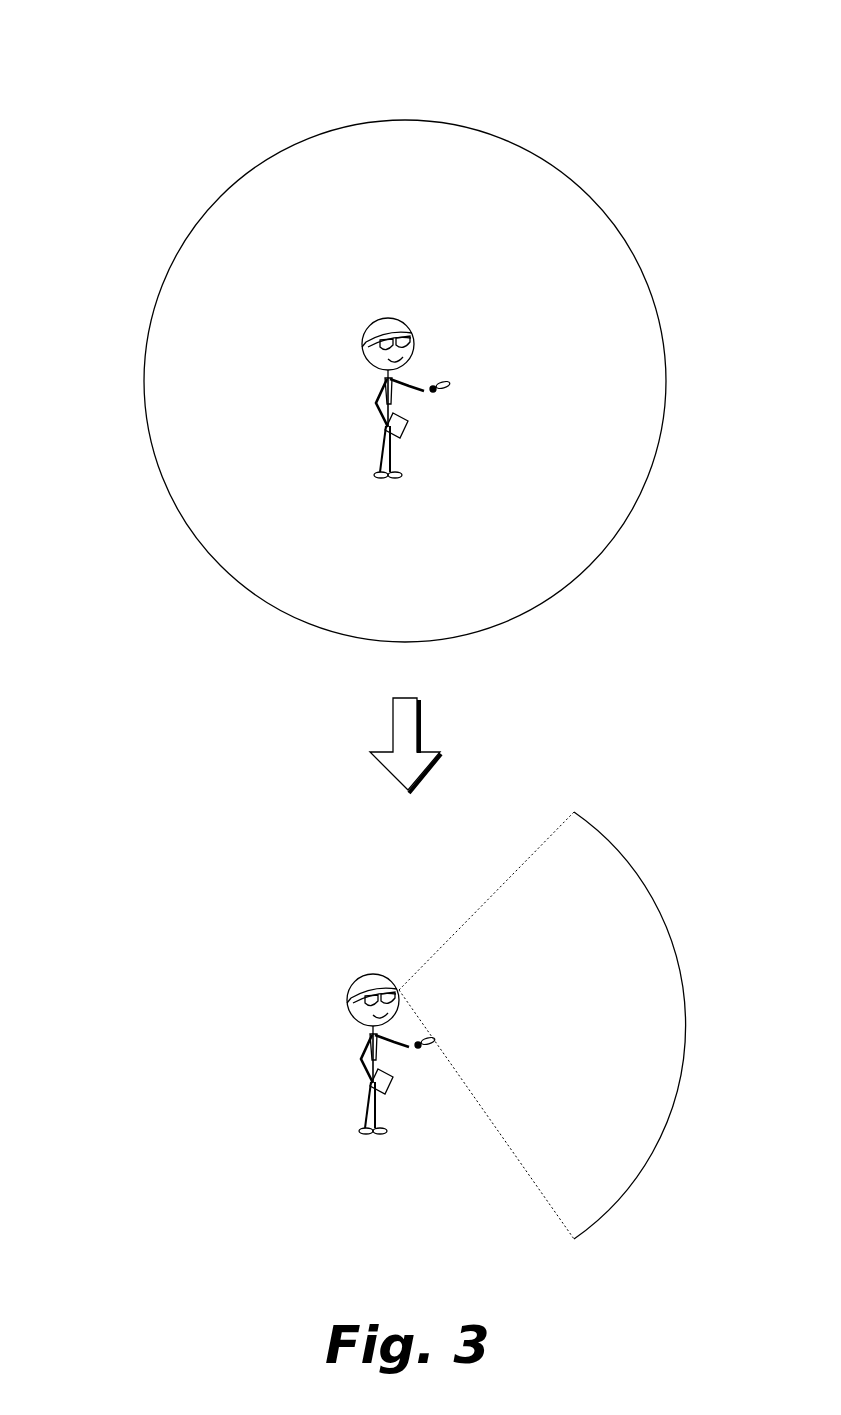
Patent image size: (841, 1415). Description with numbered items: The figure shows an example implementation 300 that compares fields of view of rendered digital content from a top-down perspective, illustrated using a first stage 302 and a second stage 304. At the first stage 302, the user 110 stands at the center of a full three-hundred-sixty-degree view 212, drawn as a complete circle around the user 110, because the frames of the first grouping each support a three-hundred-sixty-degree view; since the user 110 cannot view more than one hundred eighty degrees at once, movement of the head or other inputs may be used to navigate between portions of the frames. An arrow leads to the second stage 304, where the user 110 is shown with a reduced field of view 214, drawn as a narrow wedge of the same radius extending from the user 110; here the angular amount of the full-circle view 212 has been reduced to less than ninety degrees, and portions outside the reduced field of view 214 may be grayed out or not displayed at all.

The example implementation 300 is at (155, 78).
The first stage 302 is at (179, 168).
The second stage 304 is at (197, 867).
The user 110 is at (387, 318).
The 360-degree view 212 is at (405, 118).
The reduced field of view 214 is at (644, 896).